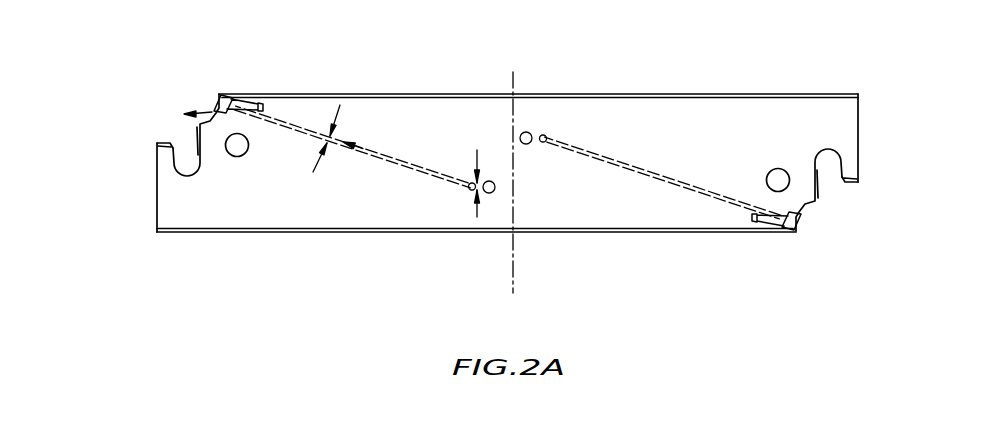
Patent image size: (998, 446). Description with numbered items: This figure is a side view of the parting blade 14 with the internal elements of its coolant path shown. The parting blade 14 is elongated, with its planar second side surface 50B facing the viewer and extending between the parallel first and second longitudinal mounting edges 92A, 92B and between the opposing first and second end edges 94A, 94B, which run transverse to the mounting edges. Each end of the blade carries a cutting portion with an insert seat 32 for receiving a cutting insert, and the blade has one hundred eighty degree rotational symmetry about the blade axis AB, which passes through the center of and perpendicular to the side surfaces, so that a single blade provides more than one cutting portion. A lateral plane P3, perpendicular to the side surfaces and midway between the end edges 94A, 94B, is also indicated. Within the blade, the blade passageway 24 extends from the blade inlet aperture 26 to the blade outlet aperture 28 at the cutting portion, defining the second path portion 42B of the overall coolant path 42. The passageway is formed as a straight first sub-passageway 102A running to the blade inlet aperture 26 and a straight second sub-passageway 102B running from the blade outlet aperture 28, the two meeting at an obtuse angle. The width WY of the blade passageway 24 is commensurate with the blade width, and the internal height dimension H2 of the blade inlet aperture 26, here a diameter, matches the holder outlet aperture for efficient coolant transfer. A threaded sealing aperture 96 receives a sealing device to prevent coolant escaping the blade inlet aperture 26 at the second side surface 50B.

The parting blade 14 is at (880, 73).
The blade passageway 24 is at (441, 178).
The blade inlet aperture 26 is at (469, 191).
The blade outlet aperture 28 is at (213, 111).
The insert seat 32 is at (150, 134).
The coolant path 42 is at (386, 162).
The second path portion 42B is at (507, 162).
The second side surface 50B is at (348, 211).
The first longitudinal mounting edge 92A is at (547, 93).
The second longitudinal mounting edge 92B is at (563, 232).
The first end edge 94A is at (157, 196).
The second end edge 94B is at (858, 150).
The sealing aperture 96 is at (493, 180).
The first sub-passageway 102A is at (305, 128).
The second sub-passageway 102B is at (212, 113).
The internal height dimension H2 is at (463, 171).
The width of the blade passageway WY is at (311, 141).
The lateral plane P3 is at (518, 187).
The blade axis AB is at (515, 155).